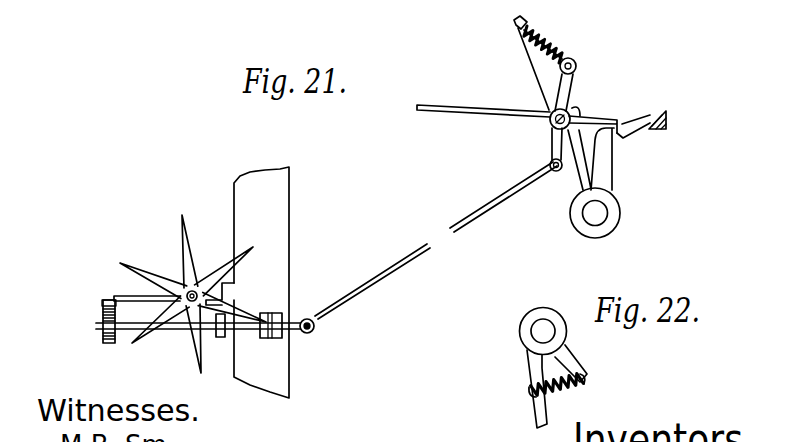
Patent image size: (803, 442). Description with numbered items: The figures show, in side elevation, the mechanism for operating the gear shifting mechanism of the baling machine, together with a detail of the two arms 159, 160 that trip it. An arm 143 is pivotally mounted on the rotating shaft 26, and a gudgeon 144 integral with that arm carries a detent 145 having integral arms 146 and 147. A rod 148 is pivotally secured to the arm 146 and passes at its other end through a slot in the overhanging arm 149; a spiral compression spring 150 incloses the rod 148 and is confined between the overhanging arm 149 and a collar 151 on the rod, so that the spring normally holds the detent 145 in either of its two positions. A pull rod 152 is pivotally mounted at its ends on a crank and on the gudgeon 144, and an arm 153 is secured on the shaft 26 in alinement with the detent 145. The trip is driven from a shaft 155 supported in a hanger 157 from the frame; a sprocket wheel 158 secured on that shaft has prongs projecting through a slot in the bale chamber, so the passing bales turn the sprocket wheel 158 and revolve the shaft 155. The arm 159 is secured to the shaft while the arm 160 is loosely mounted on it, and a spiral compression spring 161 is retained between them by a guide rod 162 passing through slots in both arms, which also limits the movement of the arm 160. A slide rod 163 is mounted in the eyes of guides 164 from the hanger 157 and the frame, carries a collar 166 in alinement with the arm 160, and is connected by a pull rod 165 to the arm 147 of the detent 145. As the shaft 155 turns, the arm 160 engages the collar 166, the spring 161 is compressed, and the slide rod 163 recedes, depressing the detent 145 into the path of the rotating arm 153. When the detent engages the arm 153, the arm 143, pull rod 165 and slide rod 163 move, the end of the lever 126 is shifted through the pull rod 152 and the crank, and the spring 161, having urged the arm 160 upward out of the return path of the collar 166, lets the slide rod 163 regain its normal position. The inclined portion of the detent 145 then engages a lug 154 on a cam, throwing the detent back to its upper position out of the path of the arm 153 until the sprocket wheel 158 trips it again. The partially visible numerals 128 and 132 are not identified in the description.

In FIG. 21, the shaft 26 is at (597, 213).
In FIG. 21, the lever 126 is at (612, 5).
In FIG. 21, the frame member 128 is at (459, 6).
In FIG. 21, the frame member 132 is at (405, 0).
In FIG. 21, the arm 143 is at (545, 82).
In FIG. 21, the gudgeon 144 is at (548, 125).
In FIG. 21, the detent 145 is at (588, 118).
In FIG. 21, the arm 146 is at (571, 88).
In FIG. 21, the arm 147 is at (553, 142).
In FIG. 21, the rod 148 is at (514, 24).
In FIG. 21, the overhanging arm 149 is at (534, 25).
In FIG. 21, the spiral compression spring 150 is at (566, 51).
In FIG. 21, the collar 151 is at (570, 57).
In FIG. 21, the pull rod 152 is at (442, 108).
In FIG. 21, the arm 153 is at (600, 176).
In FIG. 21, the lug 154 is at (667, 121).
In FIG. 21, the shaft 155 is at (183, 284).
In FIG. 22, the shaft 155 is at (540, 328).
In FIG. 21, the hanger 157 is at (124, 299).
In FIG. 21, the sprocket wheel 158 is at (186, 275).
In FIG. 22, the arm 159 is at (567, 360).
In FIG. 21, the arm 160 is at (118, 264).
In FIG. 22, the arm 160 is at (536, 365).
In FIG. 22, the spiral compression spring 161 is at (537, 375).
In FIG. 22, the guide rod 162 is at (528, 393).
In FIG. 21, the slide rod 163 is at (100, 326).
In FIG. 21, the guides 164 is at (272, 312).
In FIG. 21, the pull rod 165 is at (481, 214).
In FIG. 21, the collar 166 is at (226, 337).